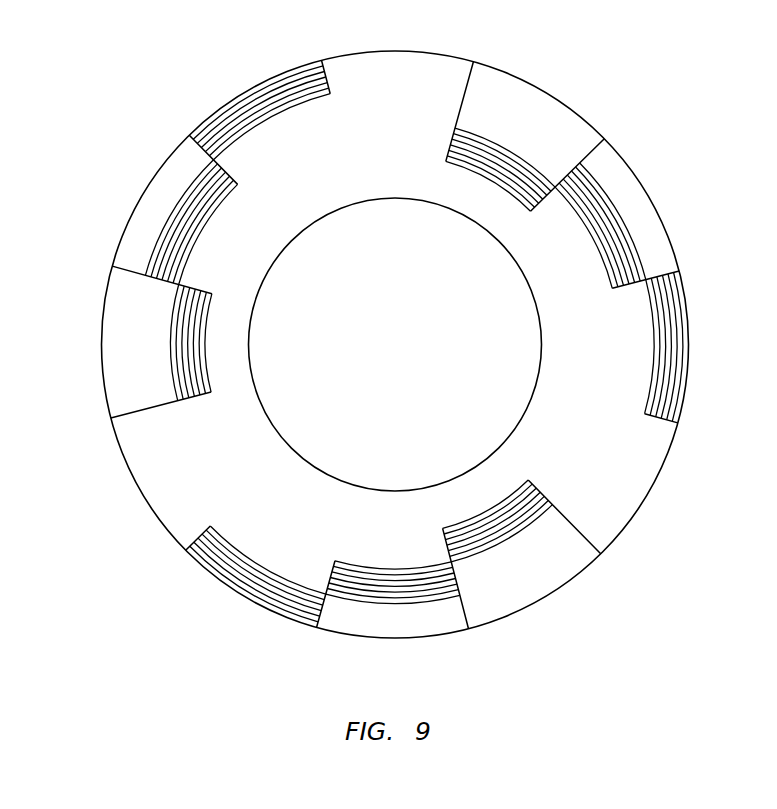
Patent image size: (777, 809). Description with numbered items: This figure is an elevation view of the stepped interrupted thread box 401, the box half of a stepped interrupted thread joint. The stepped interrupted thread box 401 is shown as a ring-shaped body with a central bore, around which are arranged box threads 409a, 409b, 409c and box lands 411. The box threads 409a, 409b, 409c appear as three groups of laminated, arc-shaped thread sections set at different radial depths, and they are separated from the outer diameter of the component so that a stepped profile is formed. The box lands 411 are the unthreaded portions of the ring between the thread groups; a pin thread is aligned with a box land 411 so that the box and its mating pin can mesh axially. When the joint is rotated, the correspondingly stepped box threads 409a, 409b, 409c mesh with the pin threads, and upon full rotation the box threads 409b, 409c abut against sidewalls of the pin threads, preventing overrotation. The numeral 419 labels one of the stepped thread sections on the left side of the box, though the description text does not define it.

The stepped interrupted thread box 401 is at (388, 333).
The box thread 409a is at (675, 366).
The box thread 409b is at (605, 208).
The box thread 409c is at (508, 152).
The box land 411 is at (657, 482).
The magnet segment pocket 419 is at (115, 256).